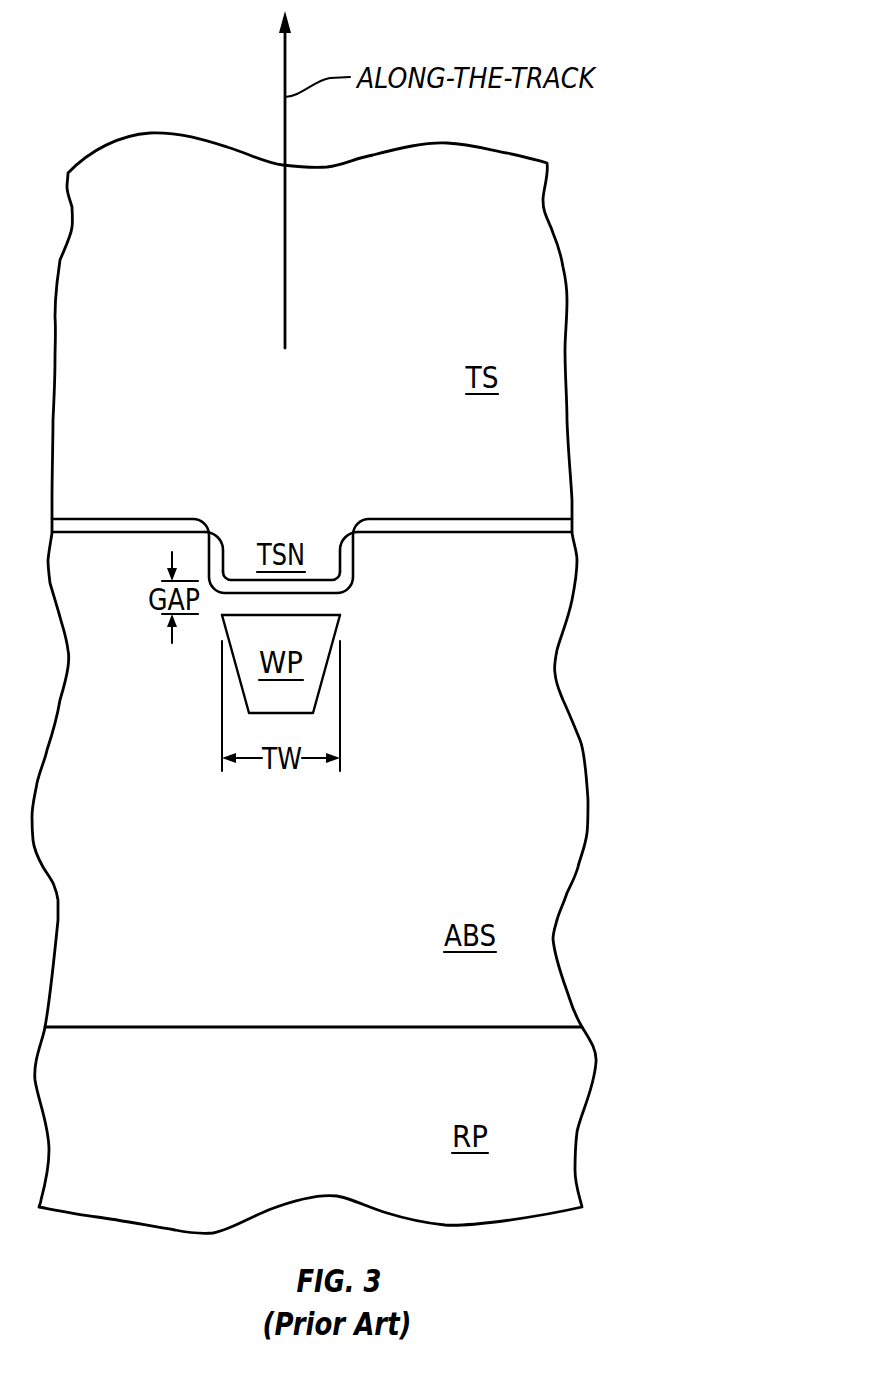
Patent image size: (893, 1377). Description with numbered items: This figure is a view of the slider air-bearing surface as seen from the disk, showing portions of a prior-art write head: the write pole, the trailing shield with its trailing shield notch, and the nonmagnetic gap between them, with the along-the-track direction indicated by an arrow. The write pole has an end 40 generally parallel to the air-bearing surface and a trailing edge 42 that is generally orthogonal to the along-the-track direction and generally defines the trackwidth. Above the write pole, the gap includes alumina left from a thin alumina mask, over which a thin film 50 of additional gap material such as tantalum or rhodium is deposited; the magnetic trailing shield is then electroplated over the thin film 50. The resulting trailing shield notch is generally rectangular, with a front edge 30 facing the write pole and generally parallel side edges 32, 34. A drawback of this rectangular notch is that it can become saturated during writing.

The front edge 30 is at (240, 577).
The side edge 32 is at (228, 555).
The side edge 34 is at (338, 562).
The end 40 is at (310, 693).
The trailing edge 42 is at (288, 615).
The thin film 50 is at (493, 519).